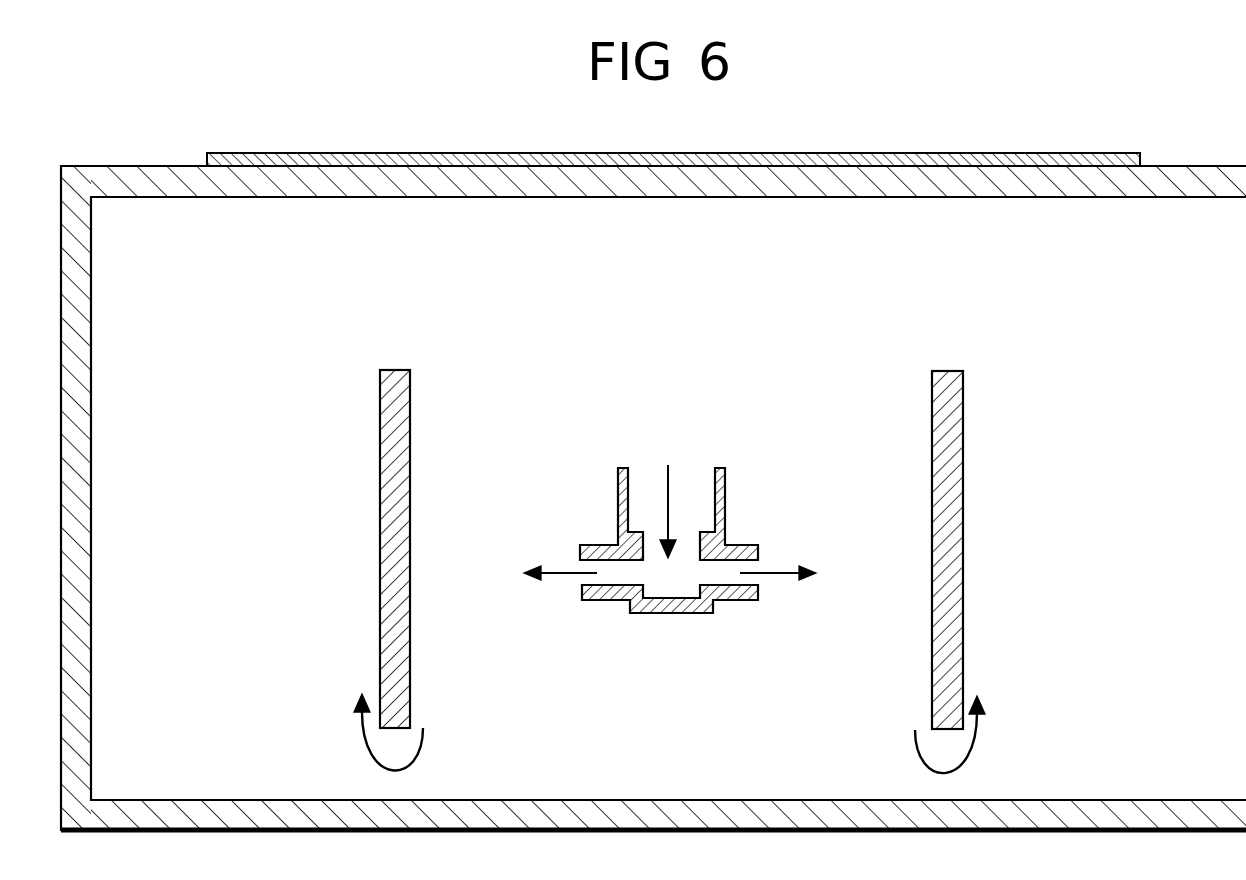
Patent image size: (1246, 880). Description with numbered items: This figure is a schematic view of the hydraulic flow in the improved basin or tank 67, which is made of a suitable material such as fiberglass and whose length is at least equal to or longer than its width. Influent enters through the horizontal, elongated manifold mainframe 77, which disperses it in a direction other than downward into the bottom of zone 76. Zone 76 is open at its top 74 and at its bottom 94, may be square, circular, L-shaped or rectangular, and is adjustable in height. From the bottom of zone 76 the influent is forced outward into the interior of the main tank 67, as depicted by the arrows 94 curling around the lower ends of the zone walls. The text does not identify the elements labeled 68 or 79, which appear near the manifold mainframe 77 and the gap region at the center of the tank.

The basin or tank 67 is at (656, 584).
The upper guide members 68 is at (618, 512).
The top of zone 74 is at (410, 381).
The zone 76 is at (674, 584).
The manifold mainframe 77 is at (695, 603).
The gap 79 is at (535, 627).
The bottom of zone / flow arrows 94 is at (417, 750).